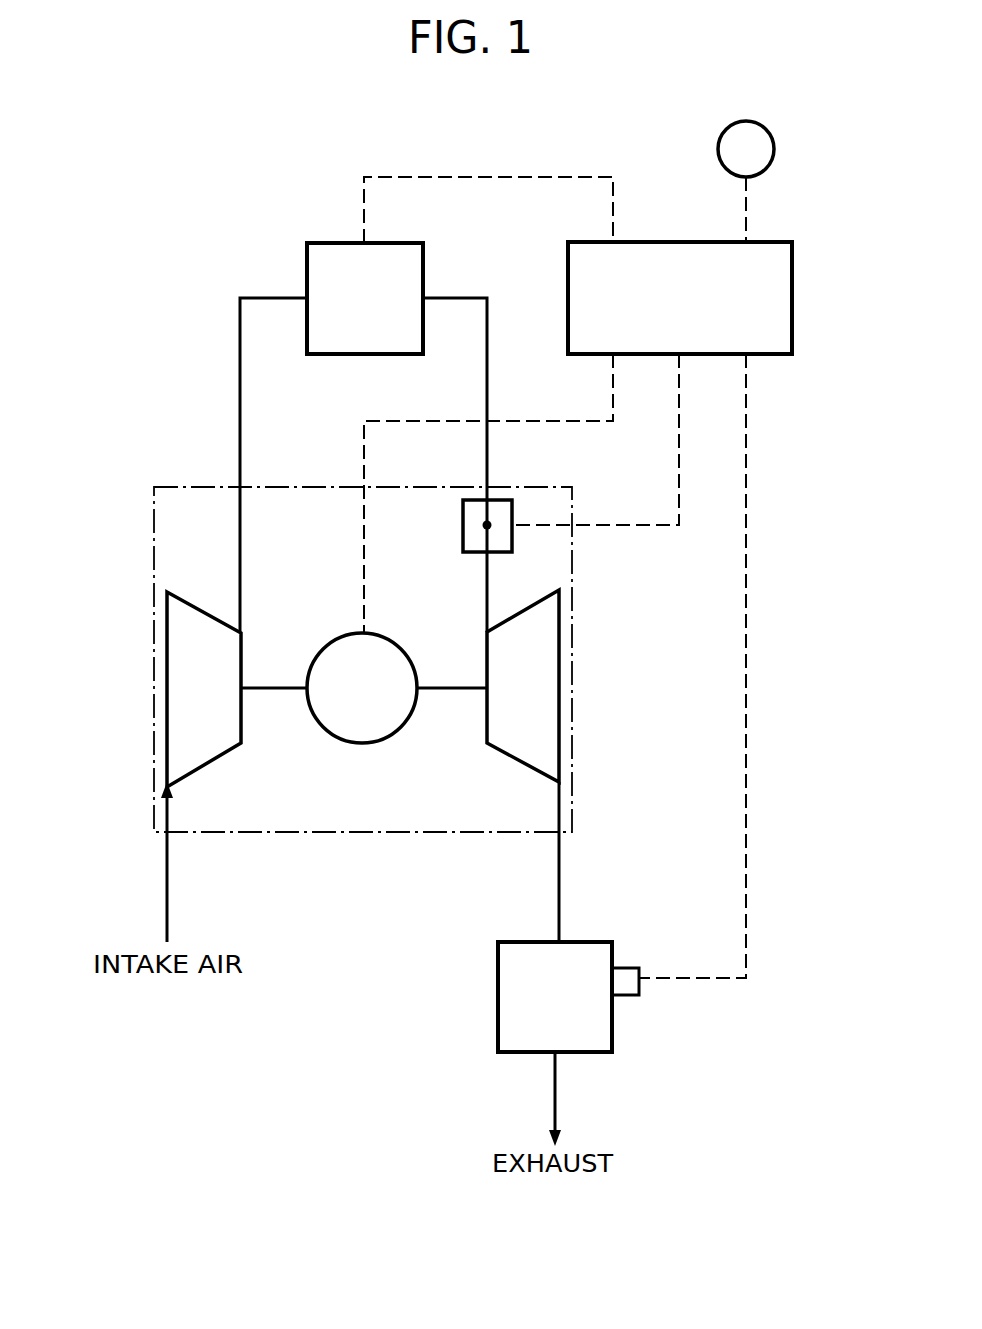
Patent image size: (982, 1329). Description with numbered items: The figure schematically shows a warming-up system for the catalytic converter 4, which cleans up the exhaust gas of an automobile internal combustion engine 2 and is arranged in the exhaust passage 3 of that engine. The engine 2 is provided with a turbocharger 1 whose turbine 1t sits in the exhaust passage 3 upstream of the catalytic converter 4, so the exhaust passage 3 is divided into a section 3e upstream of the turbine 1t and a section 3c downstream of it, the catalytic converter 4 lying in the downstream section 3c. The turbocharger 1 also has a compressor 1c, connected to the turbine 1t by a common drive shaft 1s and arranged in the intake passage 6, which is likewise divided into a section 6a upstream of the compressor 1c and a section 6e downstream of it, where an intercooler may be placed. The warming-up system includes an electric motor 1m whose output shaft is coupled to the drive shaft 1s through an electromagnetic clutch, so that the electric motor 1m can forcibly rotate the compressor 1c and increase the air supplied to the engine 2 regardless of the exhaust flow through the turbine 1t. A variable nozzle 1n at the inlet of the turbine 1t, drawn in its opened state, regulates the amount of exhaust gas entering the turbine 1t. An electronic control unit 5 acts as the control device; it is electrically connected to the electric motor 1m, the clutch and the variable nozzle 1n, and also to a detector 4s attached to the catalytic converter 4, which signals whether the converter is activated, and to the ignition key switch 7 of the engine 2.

The turbocharger 1 is at (154, 508).
The compressor 1c is at (198, 604).
The turbine 1t is at (538, 603).
The electric motor 1m is at (363, 745).
The drive shaft 1s is at (277, 692).
The variable nozzle 1n is at (463, 548).
The internal combustion engine 2 is at (330, 243).
The exhaust passage 3 is at (537, 620).
The upstream section of exhaust passage 3e is at (487, 383).
The downstream section of exhaust passage 3c is at (559, 890).
The catalytic converter 4 is at (498, 958).
The detector 4s is at (630, 985).
The electronic control unit 5 is at (792, 262).
The intake passage 6 is at (200, 620).
The upstream section of intake passage 6a is at (167, 890).
The downstream section of intake passage 6e is at (240, 386).
The ignition key switch 7 is at (770, 142).